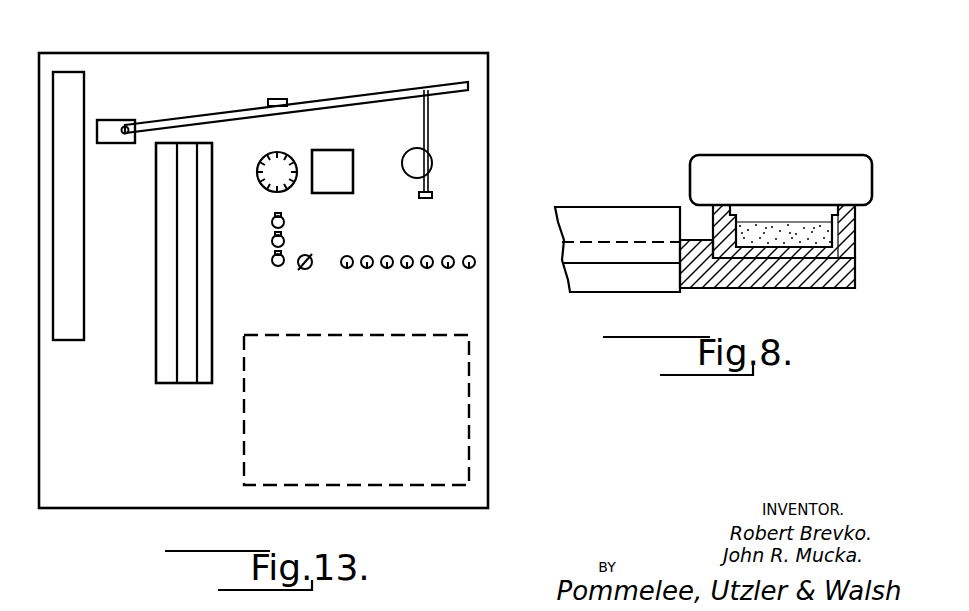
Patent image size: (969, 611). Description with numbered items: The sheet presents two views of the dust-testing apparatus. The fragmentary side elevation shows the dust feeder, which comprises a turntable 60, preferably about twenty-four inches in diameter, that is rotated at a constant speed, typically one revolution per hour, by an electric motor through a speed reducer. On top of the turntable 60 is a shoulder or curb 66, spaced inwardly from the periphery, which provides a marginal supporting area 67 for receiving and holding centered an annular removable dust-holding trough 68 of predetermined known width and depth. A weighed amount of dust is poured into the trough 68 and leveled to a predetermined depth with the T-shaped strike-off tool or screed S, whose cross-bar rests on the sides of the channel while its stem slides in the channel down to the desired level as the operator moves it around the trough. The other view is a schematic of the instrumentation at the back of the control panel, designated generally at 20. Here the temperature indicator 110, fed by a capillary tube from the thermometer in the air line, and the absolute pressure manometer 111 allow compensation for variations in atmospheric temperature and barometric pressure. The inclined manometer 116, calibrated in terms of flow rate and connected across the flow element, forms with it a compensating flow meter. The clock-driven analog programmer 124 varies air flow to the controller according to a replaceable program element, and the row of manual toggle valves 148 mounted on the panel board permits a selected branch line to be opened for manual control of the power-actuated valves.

In FIG. 13, the inclined manometer 116 is at (383, 92).
In FIG. 13, the temperature indicator 110 is at (283, 152).
In FIG. 13, the analog programmer 124 is at (325, 194).
In FIG. 13, the absolute pressure manometer 111 is at (167, 333).
In FIG. 13, the manual toggle valve 148 is at (445, 270).
In FIG. 8, the panel assembly 20 is at (589, 188).
In FIG. 8, the curb 66 is at (697, 240).
In FIG. 8, the dust-holding trough 68 is at (855, 236).
In FIG. 8, the turntable 60 is at (634, 291).
In FIG. 8, the marginal supporting area 67 is at (818, 280).